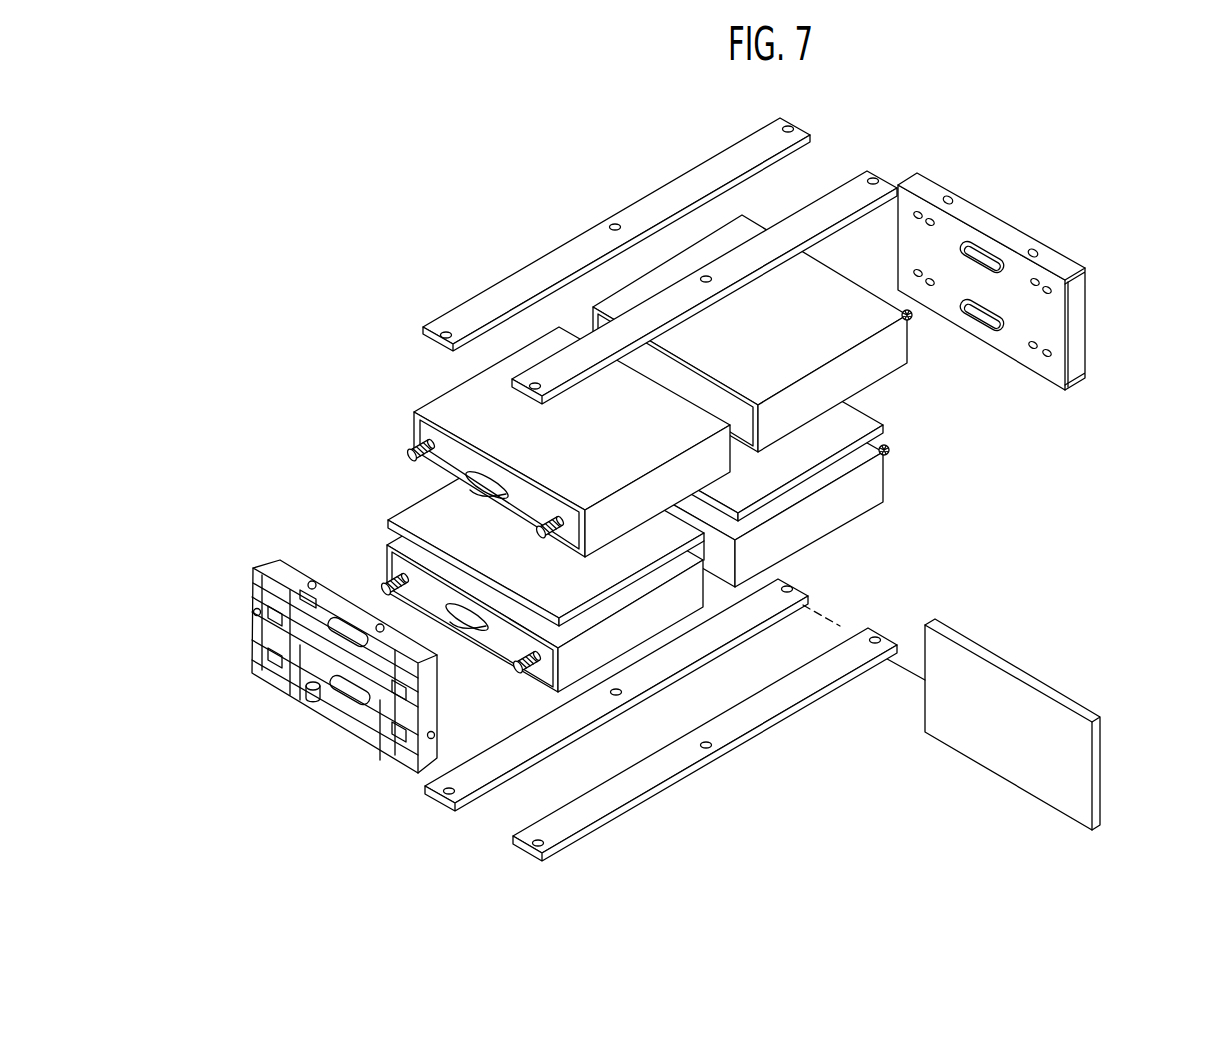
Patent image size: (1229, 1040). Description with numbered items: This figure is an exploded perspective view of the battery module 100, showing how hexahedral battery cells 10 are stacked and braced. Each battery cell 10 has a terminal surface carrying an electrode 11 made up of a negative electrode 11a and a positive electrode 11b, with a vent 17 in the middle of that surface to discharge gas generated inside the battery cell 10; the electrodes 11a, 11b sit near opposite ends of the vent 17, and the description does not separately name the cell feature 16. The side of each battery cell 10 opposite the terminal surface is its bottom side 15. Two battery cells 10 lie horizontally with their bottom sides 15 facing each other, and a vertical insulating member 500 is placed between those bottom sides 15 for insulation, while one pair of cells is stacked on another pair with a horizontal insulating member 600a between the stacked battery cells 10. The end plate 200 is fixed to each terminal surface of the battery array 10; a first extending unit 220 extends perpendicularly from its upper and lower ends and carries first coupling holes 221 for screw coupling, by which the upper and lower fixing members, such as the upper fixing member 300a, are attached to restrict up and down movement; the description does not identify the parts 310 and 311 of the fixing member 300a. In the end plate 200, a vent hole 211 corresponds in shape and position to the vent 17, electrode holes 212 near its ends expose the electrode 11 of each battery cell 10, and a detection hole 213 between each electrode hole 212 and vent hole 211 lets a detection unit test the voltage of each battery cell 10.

The battery module 100 is at (1214, 143).
The battery cell 10 is at (531, 442).
The electrode 11 is at (412, 586).
The negative electrode 11a is at (390, 583).
The positive electrode 11b is at (514, 668).
The bottom side 15 is at (883, 500).
The cell case cover 16 is at (423, 432).
The vent 17 is at (485, 483).
The end plate 200 is at (653, 467).
The vent hole 211 is at (330, 725).
The electrode hole 212 is at (1045, 356).
The detection hole 213 is at (1031, 348).
The first extending unit 220 is at (1068, 268).
The first coupling hole 221 is at (1033, 252).
The upper side frame 300a is at (660, 240).
The frame bar 310 is at (797, 128).
The frame fastening hole 311 is at (704, 276).
The vertical insulating member 500 is at (1043, 660).
The horizontal insulating member 600a is at (397, 499).